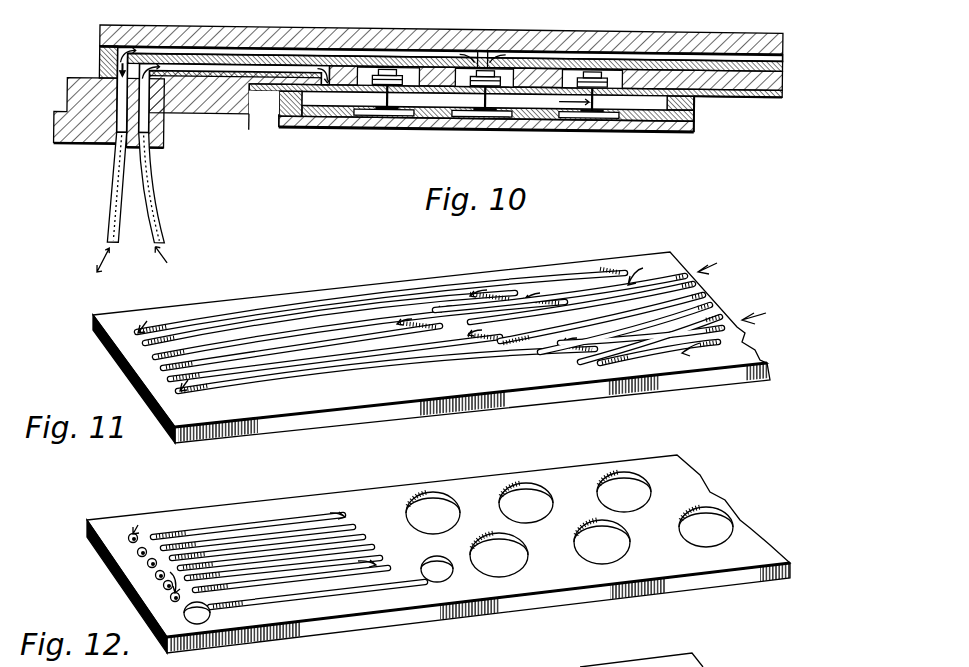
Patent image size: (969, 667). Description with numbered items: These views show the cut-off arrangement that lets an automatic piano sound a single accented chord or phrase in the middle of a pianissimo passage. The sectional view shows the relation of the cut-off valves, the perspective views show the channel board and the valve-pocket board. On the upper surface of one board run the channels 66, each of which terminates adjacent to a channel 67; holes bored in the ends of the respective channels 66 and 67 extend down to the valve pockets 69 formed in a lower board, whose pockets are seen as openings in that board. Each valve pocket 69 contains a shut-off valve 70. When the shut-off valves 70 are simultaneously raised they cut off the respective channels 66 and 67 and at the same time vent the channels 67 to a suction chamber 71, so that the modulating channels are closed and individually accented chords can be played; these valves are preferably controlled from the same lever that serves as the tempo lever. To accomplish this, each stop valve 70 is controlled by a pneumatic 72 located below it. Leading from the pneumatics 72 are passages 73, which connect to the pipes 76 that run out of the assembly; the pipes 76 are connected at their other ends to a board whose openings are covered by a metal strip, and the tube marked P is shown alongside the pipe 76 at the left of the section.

In FIG. 10, the channel 66 is at (735, 60).
In FIG. 11, the channel 66 is at (702, 300).
In FIG. 10, the channel 67 is at (225, 57).
In FIG. 11, the channel 67 is at (433, 311).
In FIG. 12, the channel 67 is at (150, 564).
In FIG. 12, the valve pocket 69 is at (490, 563).
In FIG. 10, the shut-off valve 70 is at (387, 76).
In FIG. 10, the suction chamber 71 is at (448, 100).
In FIG. 10, the pneumatic 72 is at (405, 108).
In FIG. 10, the passage 73 is at (282, 72).
In FIG. 12, the passage 73 is at (288, 562).
In FIG. 10, the pipe 76 is at (162, 213).
In FIG. 10, the pressure tube P is at (113, 205).